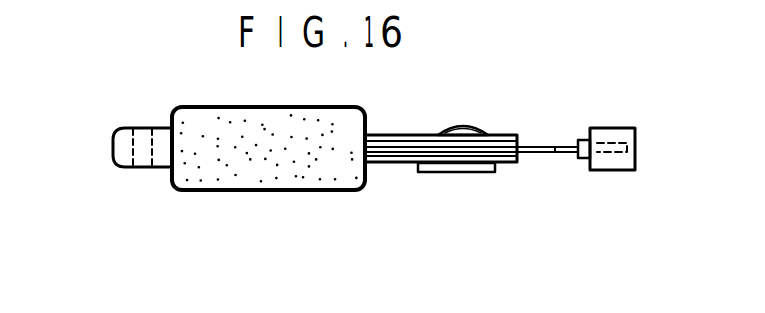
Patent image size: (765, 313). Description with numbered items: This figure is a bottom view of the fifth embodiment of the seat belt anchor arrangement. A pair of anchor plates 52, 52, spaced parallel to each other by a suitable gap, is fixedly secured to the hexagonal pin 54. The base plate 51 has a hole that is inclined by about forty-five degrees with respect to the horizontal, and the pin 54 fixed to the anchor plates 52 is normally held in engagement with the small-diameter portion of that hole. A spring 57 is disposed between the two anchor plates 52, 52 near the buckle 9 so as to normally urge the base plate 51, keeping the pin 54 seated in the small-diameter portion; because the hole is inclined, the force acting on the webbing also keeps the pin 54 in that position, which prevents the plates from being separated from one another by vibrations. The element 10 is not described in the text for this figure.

The buckle 9 is at (265, 170).
The cap 10 is at (127, 169).
The base plate 51 is at (568, 143).
The anchor plates 52 is at (402, 135).
The hexagonal pin 54 is at (467, 122).
The spring 57 is at (389, 145).